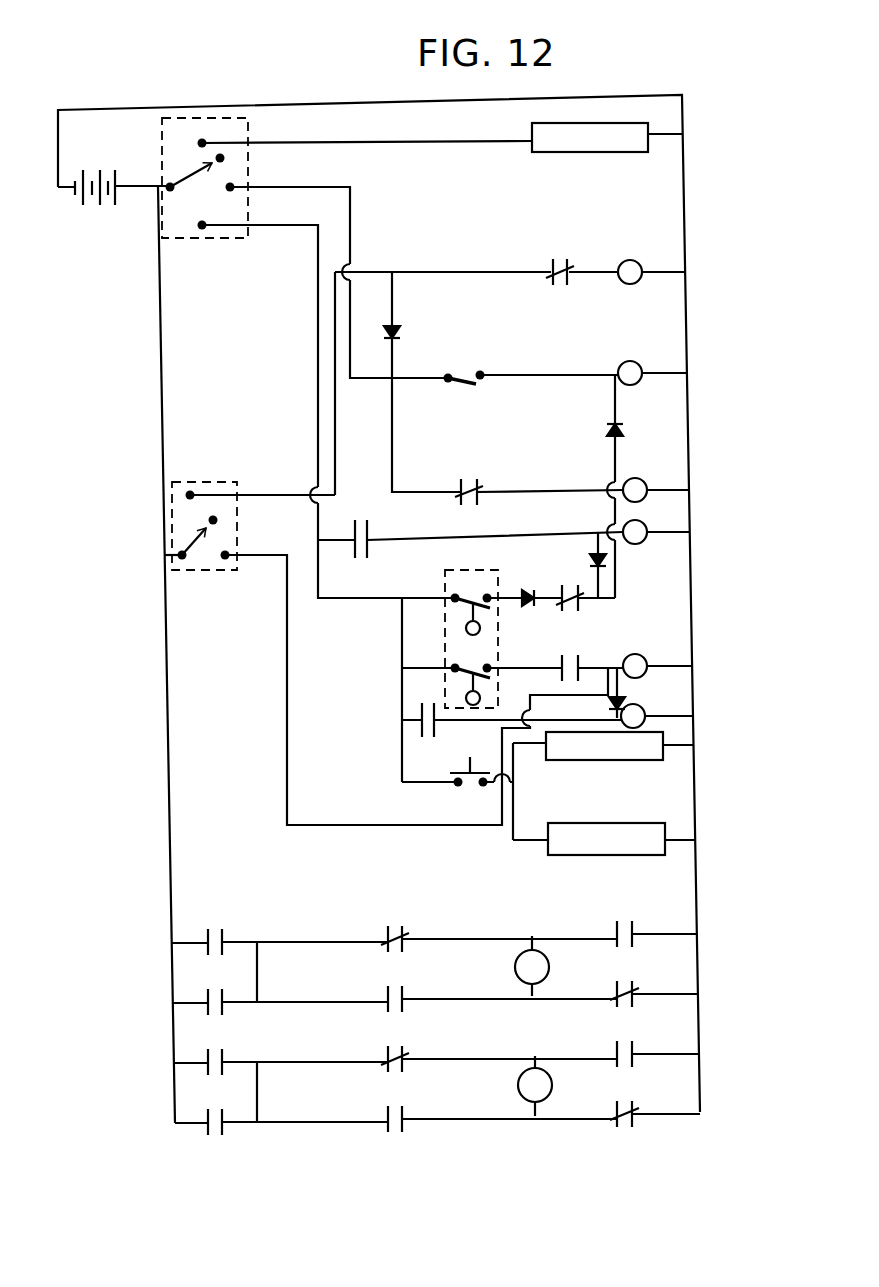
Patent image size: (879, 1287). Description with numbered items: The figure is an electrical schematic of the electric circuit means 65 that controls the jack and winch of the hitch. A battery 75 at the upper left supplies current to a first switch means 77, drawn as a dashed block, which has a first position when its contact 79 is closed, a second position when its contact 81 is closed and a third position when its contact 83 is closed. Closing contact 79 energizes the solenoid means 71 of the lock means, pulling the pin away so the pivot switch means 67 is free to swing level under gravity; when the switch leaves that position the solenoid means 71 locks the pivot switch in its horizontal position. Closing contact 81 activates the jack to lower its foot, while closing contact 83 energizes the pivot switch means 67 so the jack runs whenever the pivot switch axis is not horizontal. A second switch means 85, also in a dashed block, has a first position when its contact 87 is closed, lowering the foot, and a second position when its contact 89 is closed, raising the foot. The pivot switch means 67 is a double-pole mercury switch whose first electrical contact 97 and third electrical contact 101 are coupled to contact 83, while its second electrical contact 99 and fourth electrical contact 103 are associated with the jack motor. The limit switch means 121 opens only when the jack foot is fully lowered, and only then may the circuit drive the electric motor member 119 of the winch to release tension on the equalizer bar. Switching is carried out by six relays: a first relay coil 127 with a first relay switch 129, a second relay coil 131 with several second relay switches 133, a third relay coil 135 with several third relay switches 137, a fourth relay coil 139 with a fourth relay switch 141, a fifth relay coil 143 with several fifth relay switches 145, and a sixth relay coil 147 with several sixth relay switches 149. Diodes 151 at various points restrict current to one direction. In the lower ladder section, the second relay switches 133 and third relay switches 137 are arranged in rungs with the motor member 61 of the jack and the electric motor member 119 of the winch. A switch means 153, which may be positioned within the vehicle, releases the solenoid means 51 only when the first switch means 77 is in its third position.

The electric circuit means 65 is at (652, 50).
The solenoid means 71 is at (587, 153).
The battery 75 is at (108, 216).
The first switch means 77 is at (205, 218).
The contact 79 is at (200, 141).
The contact 81 is at (228, 187).
The contact 83 is at (201, 222).
The second switch means 85 is at (226, 562).
The contact 87 is at (196, 498).
The contact 89 is at (228, 552).
The pivot switch means 67 is at (476, 624).
The first electrical contact 97 is at (453, 594).
The second electrical contact 99 is at (489, 596).
The third electrical contact 101 is at (454, 664).
The fourth electrical contact 103 is at (490, 665).
The limit switch means 121 is at (469, 365).
The first relay coil 127 is at (627, 288).
The first relay switch 129 is at (487, 440).
The second relay coil 131 is at (632, 388).
The second relay switches 133 is at (589, 244).
The third relay coil 135 is at (640, 479).
The third relay switches 137 is at (236, 1057).
The fourth relay coil 139 is at (650, 659).
The fourth relay switch 141 is at (229, 1019).
The fifth relay coil 143 is at (637, 547).
The fifth relay switches 145 is at (371, 531).
The sixth relay coil 147 is at (642, 706).
The sixth relay switches 149 is at (590, 601).
The diodes 151 is at (401, 331).
The switch means 153 is at (472, 789).
The solenoid means 51 is at (601, 760).
The motor member 61 is at (515, 967).
The electric motor member 119 is at (518, 1085).